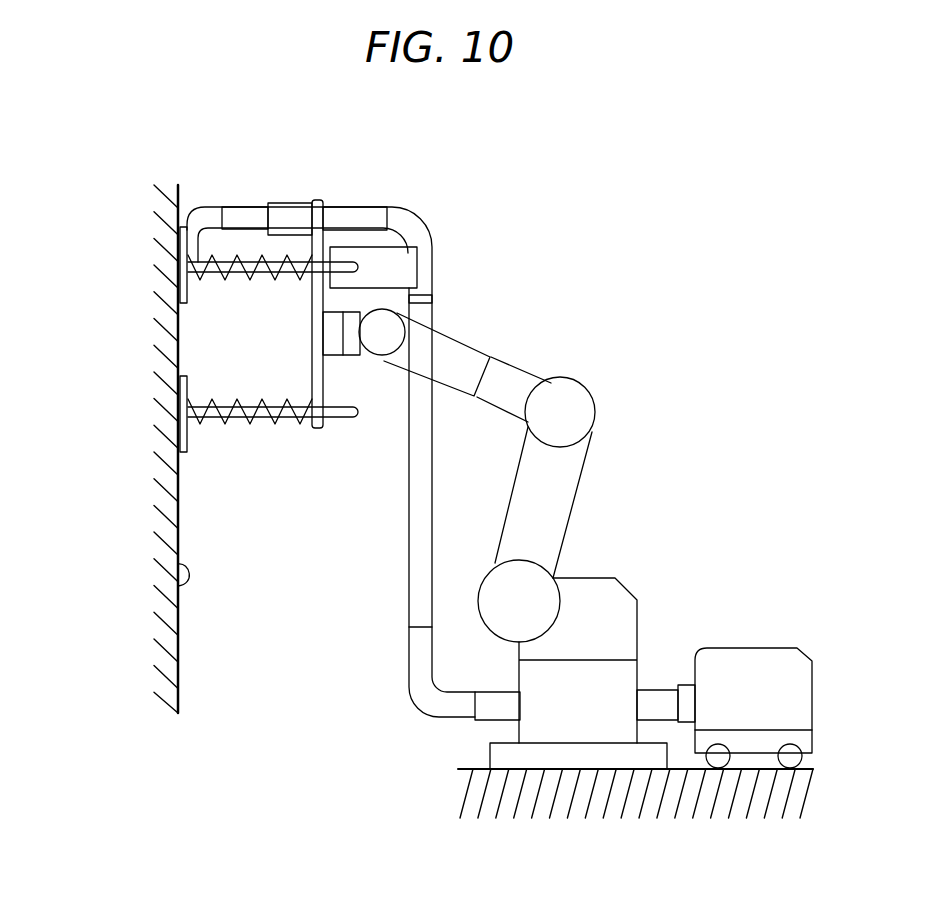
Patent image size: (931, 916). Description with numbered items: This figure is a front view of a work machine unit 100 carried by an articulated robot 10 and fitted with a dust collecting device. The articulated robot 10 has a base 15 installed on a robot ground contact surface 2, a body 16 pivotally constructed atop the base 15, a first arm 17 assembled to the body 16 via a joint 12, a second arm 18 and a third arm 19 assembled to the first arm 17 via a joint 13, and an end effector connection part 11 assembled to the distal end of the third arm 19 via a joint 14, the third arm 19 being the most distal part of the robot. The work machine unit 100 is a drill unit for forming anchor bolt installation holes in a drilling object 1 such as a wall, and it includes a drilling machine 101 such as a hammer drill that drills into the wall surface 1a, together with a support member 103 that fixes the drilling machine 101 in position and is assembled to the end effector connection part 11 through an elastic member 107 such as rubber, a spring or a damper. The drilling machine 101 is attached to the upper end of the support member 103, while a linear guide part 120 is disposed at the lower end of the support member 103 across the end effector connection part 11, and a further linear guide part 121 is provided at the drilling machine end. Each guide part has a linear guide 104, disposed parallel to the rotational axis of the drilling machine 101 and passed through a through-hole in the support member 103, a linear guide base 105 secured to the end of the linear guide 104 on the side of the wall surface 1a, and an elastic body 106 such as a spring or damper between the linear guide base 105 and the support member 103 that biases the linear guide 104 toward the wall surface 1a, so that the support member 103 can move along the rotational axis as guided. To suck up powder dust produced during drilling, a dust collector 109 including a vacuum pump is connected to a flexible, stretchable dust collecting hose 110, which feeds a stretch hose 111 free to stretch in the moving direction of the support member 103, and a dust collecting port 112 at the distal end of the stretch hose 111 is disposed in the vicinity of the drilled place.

The drilling object 1 is at (160, 375).
The wall surface 1a is at (175, 585).
The robot ground contact surface 2 is at (487, 767).
The articulated robot 10 is at (537, 526).
The end effector connection part 11 is at (432, 302).
The joint 12 is at (497, 623).
The joint 13 is at (581, 397).
The joint 14 is at (382, 343).
The base 15 is at (632, 680).
The body 16 is at (617, 580).
The first arm 17 is at (562, 493).
The second arm 18 is at (520, 372).
The third arm 19 is at (455, 340).
The work machine unit 100 is at (307, 422).
The drilling machine 101 is at (418, 264).
The support member 103 is at (318, 200).
The linear guide 104 is at (340, 263).
The linear guide base 105 is at (177, 290).
The elastic body 106 is at (248, 280).
The elastic member 107 is at (335, 330).
The dust collector 109 is at (753, 652).
The dust collecting hose 110 is at (415, 600).
The stretch hose 111 is at (240, 207).
The dust collecting port 112 is at (186, 227).
The linear guide part 120 is at (249, 448).
The linear guide part 121 is at (210, 295).